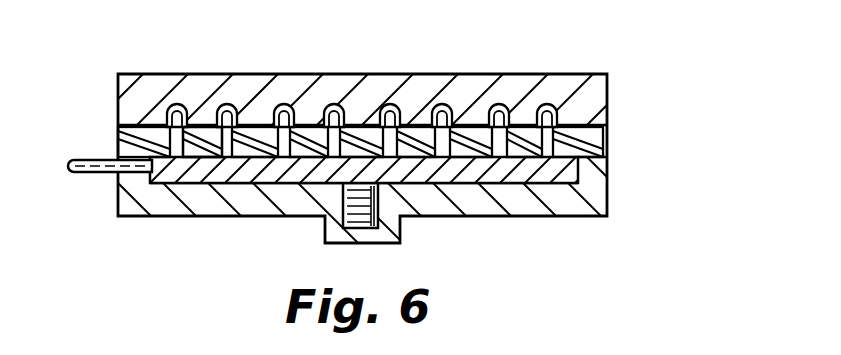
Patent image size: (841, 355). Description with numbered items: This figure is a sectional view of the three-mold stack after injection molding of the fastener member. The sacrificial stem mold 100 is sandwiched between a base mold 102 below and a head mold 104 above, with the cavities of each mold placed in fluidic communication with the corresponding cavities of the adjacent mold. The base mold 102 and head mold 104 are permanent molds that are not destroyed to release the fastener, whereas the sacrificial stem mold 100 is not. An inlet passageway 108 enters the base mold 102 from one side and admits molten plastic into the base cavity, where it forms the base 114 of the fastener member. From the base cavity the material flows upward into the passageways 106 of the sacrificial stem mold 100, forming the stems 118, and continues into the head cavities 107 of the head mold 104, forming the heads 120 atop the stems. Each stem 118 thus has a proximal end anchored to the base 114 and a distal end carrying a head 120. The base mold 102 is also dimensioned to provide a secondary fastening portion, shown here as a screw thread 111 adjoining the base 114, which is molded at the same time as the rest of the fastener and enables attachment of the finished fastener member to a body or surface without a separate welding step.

The sacrificial stem mold 100 is at (394, 93).
The base mold 102 is at (636, 197).
The head mold 104 is at (636, 82).
The passageways 106 is at (163, 140).
The head cavities 107 is at (284, 118).
The inlet passageway 108 is at (97, 175).
The screw thread 111 is at (343, 228).
The base 114 is at (540, 180).
The stems 118 is at (207, 132).
The heads 120 is at (507, 125).